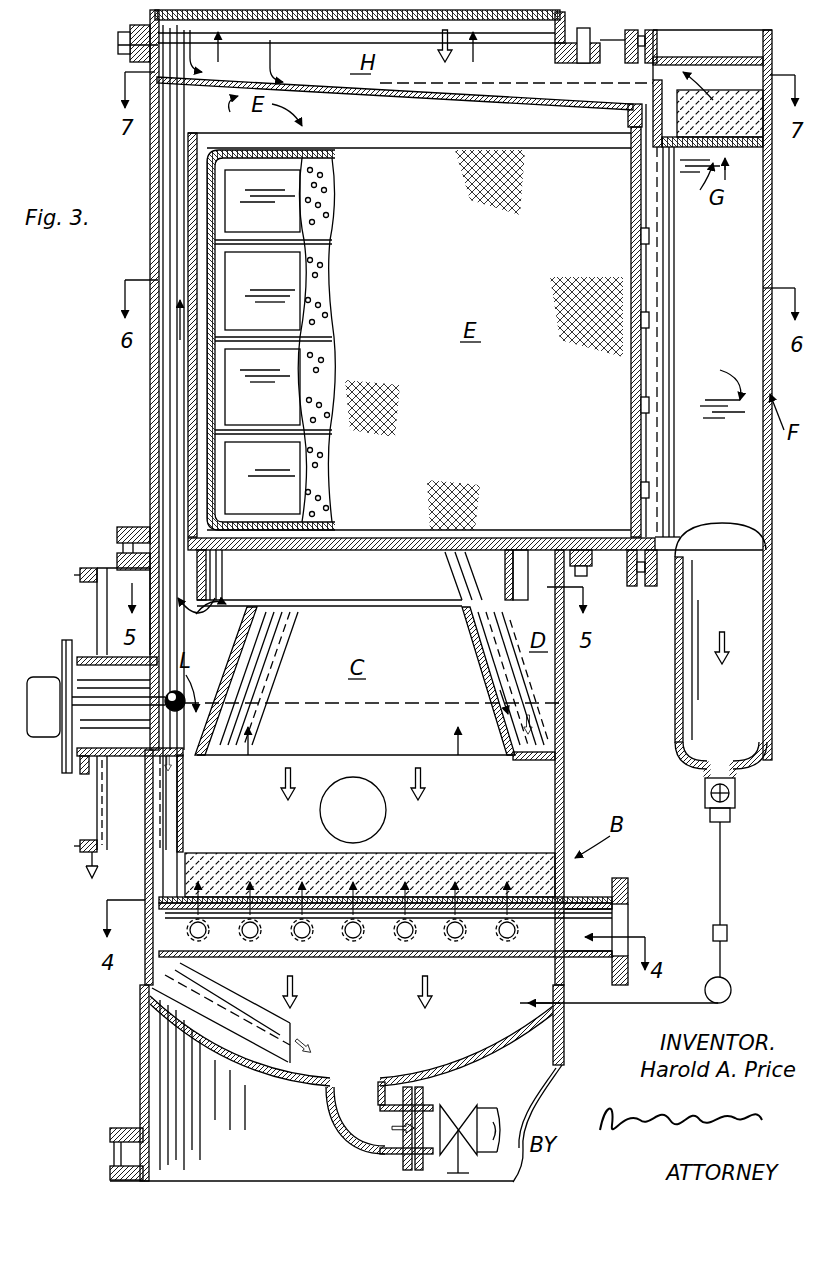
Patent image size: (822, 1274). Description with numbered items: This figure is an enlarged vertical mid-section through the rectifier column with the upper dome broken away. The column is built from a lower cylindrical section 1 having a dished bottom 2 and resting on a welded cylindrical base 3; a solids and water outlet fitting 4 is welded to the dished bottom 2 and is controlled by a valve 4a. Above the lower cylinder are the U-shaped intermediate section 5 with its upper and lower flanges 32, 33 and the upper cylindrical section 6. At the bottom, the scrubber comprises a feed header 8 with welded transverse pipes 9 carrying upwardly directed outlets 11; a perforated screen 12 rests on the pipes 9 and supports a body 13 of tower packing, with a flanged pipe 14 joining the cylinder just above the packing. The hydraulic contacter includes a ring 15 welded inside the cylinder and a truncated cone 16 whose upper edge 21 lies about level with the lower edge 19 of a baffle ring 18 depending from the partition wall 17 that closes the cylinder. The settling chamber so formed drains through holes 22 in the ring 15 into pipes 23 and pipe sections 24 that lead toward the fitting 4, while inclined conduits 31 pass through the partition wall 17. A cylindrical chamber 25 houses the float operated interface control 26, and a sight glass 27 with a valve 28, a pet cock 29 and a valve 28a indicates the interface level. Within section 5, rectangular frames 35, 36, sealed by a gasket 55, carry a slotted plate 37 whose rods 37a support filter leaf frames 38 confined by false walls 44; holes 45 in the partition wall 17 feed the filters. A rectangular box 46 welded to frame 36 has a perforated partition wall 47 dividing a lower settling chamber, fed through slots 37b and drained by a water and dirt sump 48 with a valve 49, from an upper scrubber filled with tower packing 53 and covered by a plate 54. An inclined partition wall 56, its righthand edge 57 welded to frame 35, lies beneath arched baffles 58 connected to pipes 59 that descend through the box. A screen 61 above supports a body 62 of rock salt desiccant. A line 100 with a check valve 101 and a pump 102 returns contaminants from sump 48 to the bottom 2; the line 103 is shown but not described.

The lower cylindrical section 1 is at (565, 728).
The dished bottom 2 is at (492, 1062).
The cylindrical base 3 is at (567, 1052).
The solids and water outlet fitting 4 is at (355, 1140).
The valve 4a is at (455, 1112).
The intermediate section 5 is at (150, 388).
The upper cylindrical section 6 is at (566, 16).
The feed header 8 is at (616, 966).
The transverse pipes 9 is at (518, 935).
The upwardly directed outlets 11 is at (456, 922).
The perforated screen 12 is at (158, 888).
The body of tower packing 13 is at (515, 853).
The flanged pipe 14 is at (330, 831).
The ring 15 is at (538, 762).
The truncated cone 16 is at (240, 667).
The partition wall 17 is at (348, 556).
The baffle ring 18 is at (215, 586).
The lower edge of baffle ring 19 is at (514, 604).
The upper edge of truncated cone 21 is at (330, 605).
The holes 22 is at (178, 711).
The pipe 23 is at (183, 814).
The pipe section 24 is at (240, 1013).
The cylindrical chamber 25 is at (118, 766).
The automatic float operated interface control 26 is at (46, 740).
The sight glass 27 is at (97, 612).
The valve 28 is at (88, 570).
The valve 28a is at (84, 845).
The pet cock 29 is at (90, 868).
The inclined conduits 31 is at (512, 688).
The flange 32 is at (120, 48).
The flange 33 is at (120, 535).
The rectangular frame 35 is at (648, 32).
The rectangular frame 36 is at (658, 50).
The vertically slotted rectangular plate 37 is at (631, 378).
The rods 37a is at (650, 238).
The slots 37b is at (631, 452).
The reticulated filter leaf frames 38 is at (232, 407).
The false walls 44 is at (188, 372).
The holes 45 is at (172, 548).
The rectangular box 46 is at (771, 520).
The perforated partition wall 47 is at (738, 152).
The water and dirt sump 48 is at (771, 632).
The valve 49 is at (736, 795).
The body of tower packing 53 is at (750, 96).
The plate 54 is at (715, 60).
The gasket 55 is at (632, 128).
The inclined partition wall 56 is at (480, 100).
The righthand edge of inclined partition wall 57 is at (628, 116).
The upwardly arched baffles 58 is at (485, 83).
The pipe 59 is at (676, 322).
The screen or perforated partition wall 61 is at (312, 22).
The body of desiccating material 62 is at (247, 22).
The line 100 is at (723, 884).
The check valve 101 is at (727, 933).
The pump 102 is at (732, 990).
The return line 103 is at (632, 1004).